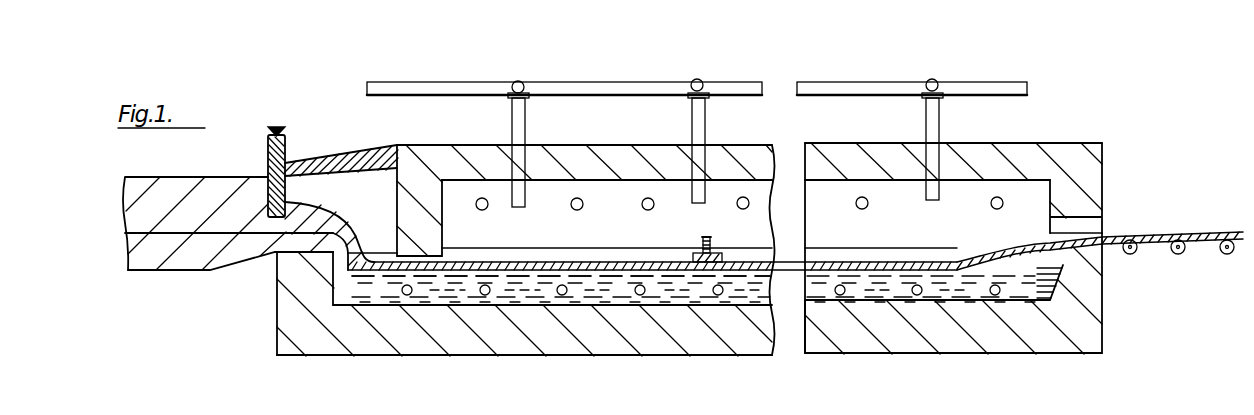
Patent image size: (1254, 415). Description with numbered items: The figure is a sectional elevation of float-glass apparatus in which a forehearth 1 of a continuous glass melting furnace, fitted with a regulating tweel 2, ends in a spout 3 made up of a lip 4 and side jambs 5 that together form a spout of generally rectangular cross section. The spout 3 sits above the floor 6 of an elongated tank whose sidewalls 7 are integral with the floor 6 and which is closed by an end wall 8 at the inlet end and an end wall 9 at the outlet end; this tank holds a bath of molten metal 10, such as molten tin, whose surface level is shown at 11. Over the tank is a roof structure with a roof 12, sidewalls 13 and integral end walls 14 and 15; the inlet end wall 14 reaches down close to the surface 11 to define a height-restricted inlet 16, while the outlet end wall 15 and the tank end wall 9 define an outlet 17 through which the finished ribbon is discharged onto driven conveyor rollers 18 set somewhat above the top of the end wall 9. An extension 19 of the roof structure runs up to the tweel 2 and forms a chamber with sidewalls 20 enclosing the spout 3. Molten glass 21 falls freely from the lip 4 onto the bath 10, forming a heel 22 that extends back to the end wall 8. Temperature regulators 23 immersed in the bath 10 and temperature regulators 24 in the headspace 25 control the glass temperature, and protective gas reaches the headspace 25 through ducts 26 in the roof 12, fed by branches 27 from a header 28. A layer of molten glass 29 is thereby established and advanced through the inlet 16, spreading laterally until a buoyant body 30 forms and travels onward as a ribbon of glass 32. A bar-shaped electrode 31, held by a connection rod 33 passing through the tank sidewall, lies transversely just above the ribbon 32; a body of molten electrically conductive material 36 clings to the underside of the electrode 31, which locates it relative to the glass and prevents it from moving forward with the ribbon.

The forehearth 1 is at (212, 270).
The regulating tweel 2 is at (268, 163).
The spout 3 is at (271, 257).
The lip 4 is at (337, 248).
The side jambs 5 is at (300, 214).
The floor 6 is at (533, 340).
The sidewalls 7 is at (606, 256).
The end wall 8 is at (293, 337).
The end wall 9 is at (1082, 323).
The bath of molten metal 10 is at (757, 293).
The surface level 11 is at (1042, 270).
The roof 12 is at (750, 150).
The sidewalls 13 is at (537, 192).
The inlet end wall 14 is at (410, 188).
The outlet end wall 15 is at (1102, 175).
The inlet 16 is at (392, 255).
The outlet 17 is at (1077, 223).
The conveyor rollers 18 is at (1225, 255).
The extension 19 is at (371, 162).
The sidewalls 20 is at (322, 170).
The molten glass 21 is at (362, 218).
The heel 22 is at (343, 268).
The temperature regulators 23 is at (482, 296).
The temperature regulators 24 is at (481, 210).
The headspace 25 is at (650, 232).
The ducts 26 is at (524, 105).
The branches 27 is at (513, 96).
The header 28 is at (423, 97).
The layer of molten glass 29 is at (390, 267).
The buoyant body 30 is at (442, 268).
The bar-shaped electrode 31 is at (722, 254).
The ribbon of glass 32 is at (610, 268).
The connection rod 33 is at (716, 242).
The body of molten electrically conductive material 36 is at (690, 253).